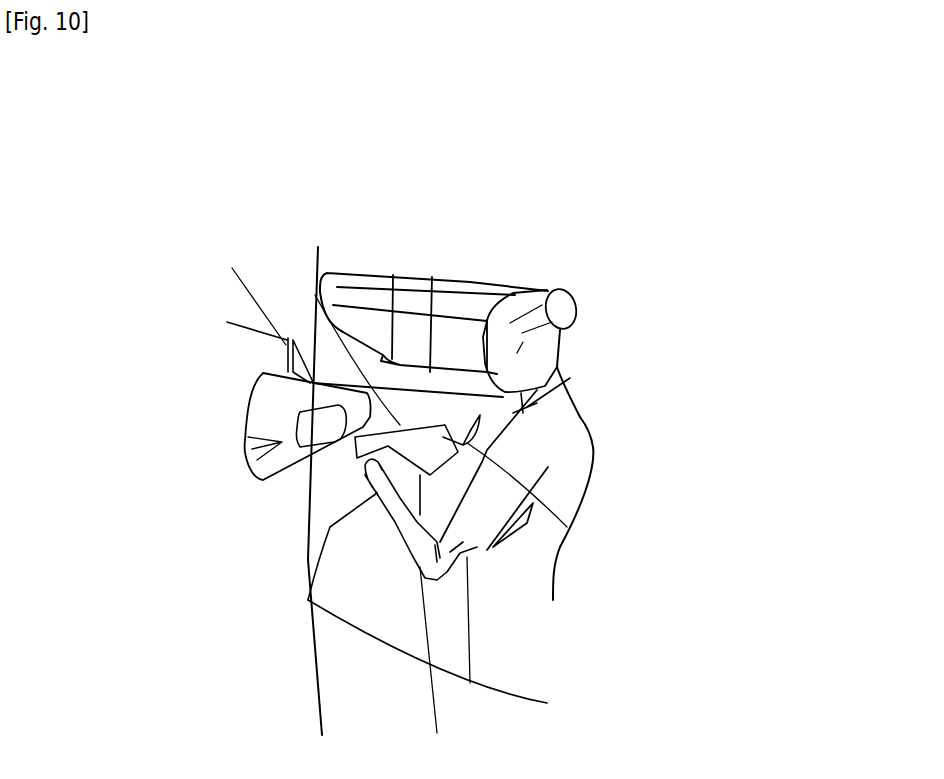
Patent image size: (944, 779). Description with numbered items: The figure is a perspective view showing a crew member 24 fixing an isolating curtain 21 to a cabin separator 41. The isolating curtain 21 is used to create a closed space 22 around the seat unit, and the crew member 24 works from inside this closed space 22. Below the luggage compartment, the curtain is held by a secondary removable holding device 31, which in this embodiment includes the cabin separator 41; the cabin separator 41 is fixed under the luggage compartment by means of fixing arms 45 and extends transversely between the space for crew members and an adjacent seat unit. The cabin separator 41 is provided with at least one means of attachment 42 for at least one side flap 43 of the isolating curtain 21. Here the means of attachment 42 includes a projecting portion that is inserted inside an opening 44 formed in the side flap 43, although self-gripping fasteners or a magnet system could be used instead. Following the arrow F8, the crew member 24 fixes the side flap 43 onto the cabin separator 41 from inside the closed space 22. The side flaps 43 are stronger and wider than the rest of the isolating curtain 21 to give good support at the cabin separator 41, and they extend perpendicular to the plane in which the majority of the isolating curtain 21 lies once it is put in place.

The isolating curtain 21 is at (426, 290).
The closed space 22 is at (623, 390).
The crew member 24 is at (567, 443).
The secondary removable holding device 31 is at (245, 443).
The cabin separator 41 is at (268, 395).
The means of attachment 42 is at (297, 425).
The side flap 43 is at (417, 405).
The opening 44 is at (567, 527).
The fixing arms 45 is at (287, 357).
The arrow F8 is at (415, 452).